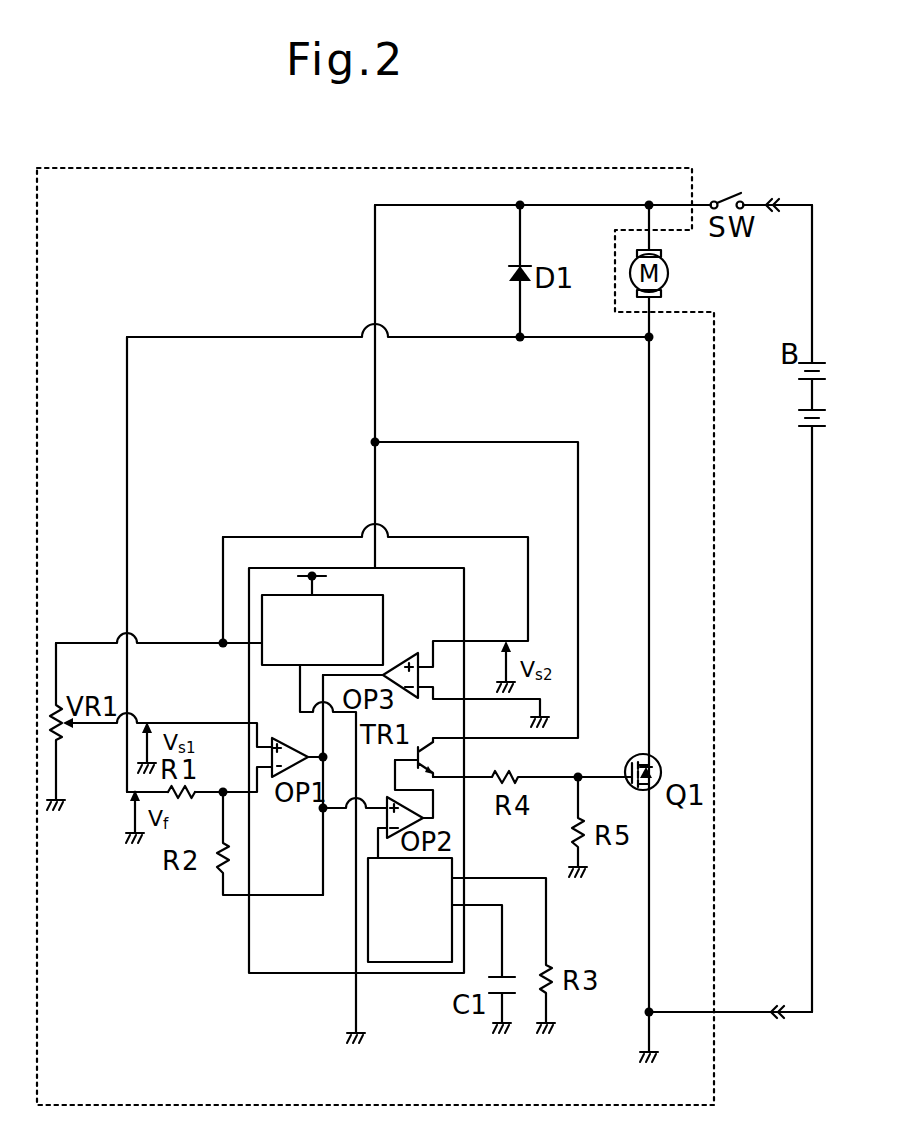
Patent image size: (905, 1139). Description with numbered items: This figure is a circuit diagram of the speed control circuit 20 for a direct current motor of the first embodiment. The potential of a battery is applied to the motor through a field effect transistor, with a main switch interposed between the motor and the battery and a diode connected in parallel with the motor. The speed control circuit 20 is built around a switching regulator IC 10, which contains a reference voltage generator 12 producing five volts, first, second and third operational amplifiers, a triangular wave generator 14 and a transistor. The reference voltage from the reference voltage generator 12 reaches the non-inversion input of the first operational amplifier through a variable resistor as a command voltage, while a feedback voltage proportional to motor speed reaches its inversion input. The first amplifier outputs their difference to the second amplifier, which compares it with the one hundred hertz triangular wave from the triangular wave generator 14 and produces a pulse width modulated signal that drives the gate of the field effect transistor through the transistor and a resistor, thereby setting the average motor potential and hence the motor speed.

The speed control circuit 20 is at (526, 168).
The switching regulator IC 10 is at (405, 568).
The reference voltage generator 12 is at (383, 615).
The triangular wave generator 14 is at (368, 937).